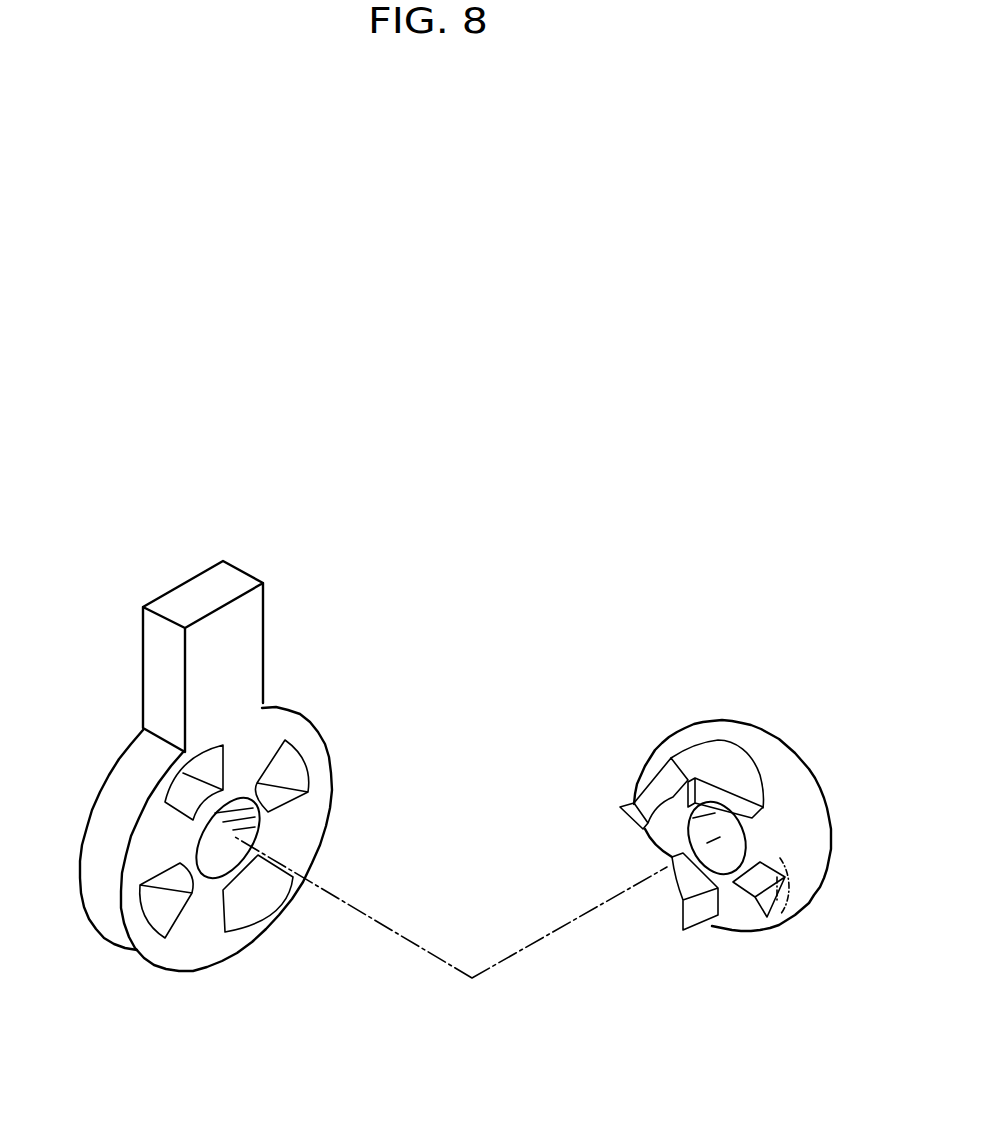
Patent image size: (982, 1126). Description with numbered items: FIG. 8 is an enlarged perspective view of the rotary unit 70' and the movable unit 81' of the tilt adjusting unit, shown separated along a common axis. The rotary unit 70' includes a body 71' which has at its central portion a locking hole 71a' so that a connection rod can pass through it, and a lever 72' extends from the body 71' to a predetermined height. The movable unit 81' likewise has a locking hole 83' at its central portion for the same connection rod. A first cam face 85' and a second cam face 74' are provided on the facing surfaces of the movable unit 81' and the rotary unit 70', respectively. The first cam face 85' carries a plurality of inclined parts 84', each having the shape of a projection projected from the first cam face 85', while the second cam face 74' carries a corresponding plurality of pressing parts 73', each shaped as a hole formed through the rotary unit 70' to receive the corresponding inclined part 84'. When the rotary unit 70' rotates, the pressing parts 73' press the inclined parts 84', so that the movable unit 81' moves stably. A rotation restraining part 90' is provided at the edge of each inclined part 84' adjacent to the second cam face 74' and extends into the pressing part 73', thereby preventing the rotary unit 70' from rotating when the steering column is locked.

The rotary unit 70' is at (253, 794).
The body 71' is at (177, 857).
The lever 72' is at (262, 634).
The pressing part 73' is at (331, 702).
The second cam face 74' is at (325, 716).
The locking hole 71a' is at (329, 822).
The movable unit 81' is at (721, 844).
The locking hole 83' is at (641, 838).
The inclined part 84' is at (779, 753).
The first cam face 85' is at (824, 844).
The rotation restraining part 90' is at (678, 752).